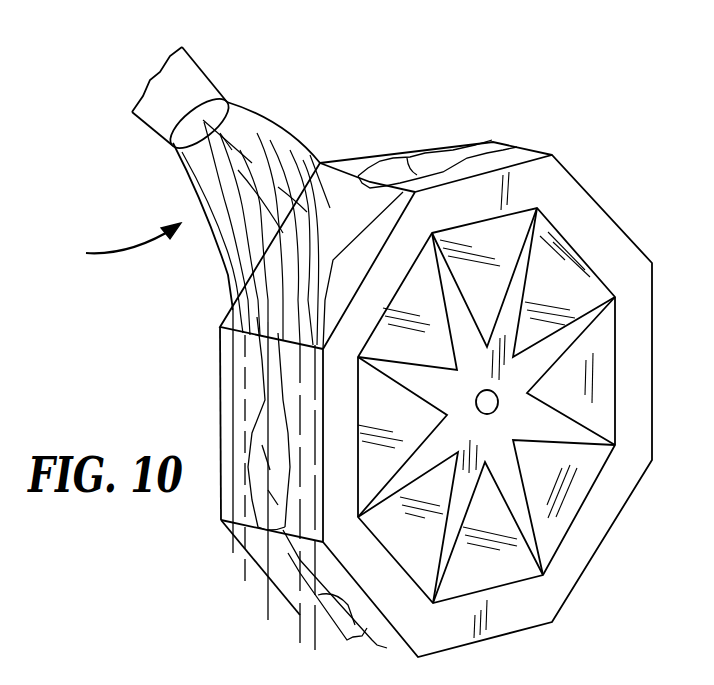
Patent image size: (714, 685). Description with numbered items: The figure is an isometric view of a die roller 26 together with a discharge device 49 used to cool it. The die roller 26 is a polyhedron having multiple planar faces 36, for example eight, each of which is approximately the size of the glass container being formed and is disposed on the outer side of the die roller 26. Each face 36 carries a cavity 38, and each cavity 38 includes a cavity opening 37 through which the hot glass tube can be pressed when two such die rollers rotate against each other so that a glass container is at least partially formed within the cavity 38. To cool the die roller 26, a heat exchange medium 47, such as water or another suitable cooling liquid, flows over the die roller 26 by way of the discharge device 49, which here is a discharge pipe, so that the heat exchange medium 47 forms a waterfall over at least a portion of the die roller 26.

The die roller 26 is at (573, 203).
The planar face 36 is at (393, 152).
The cavity opening 37 is at (352, 198).
The cavity 38 is at (468, 157).
The heat exchange medium 47 is at (117, 246).
The discharge device 49 is at (188, 80).